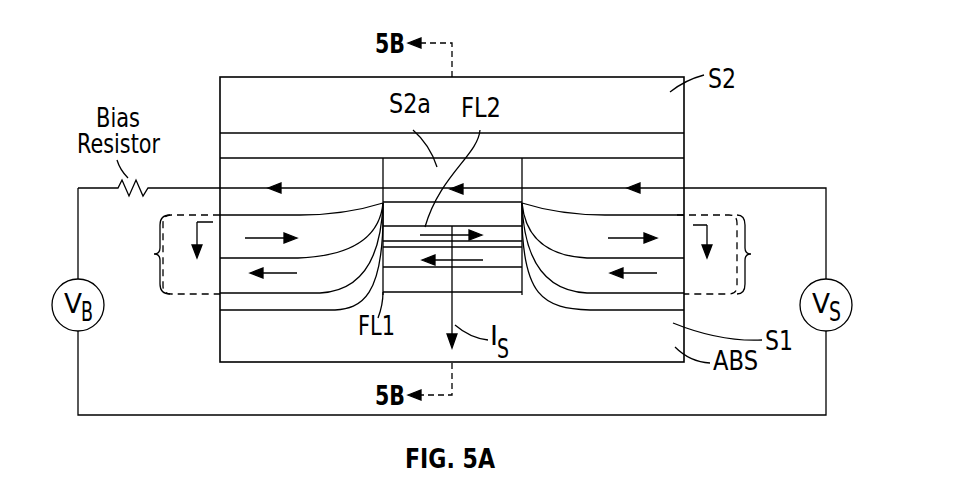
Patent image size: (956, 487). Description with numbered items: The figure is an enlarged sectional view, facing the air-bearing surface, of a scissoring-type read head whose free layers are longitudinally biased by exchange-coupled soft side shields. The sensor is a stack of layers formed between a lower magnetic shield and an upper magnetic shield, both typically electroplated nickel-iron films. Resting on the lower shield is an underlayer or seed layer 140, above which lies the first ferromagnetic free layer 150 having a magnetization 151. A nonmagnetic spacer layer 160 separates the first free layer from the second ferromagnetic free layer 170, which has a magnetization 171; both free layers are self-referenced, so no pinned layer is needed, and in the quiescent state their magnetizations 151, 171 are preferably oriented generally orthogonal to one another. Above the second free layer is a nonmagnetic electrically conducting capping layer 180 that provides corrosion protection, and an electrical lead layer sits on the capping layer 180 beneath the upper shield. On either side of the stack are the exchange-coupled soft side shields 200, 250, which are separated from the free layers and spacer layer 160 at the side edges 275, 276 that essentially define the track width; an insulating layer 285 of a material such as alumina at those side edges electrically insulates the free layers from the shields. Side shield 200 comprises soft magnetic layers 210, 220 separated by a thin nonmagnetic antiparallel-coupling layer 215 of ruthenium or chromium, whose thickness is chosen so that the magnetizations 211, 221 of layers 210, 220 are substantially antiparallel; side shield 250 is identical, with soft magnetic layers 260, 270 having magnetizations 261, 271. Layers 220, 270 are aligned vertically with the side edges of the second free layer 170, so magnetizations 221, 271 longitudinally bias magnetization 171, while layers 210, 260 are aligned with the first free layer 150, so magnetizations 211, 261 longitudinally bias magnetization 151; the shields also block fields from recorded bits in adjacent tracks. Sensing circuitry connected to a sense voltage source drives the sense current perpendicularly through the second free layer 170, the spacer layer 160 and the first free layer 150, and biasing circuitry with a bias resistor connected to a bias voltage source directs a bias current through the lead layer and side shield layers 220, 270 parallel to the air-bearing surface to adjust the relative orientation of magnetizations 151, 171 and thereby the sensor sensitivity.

The seed layer 140 is at (523, 293).
The first ferromagnetic free layer 150 is at (510, 270).
The magnetization of FL1 151 is at (445, 267).
The nonmagnetic spacer layer 160 is at (383, 200).
The second ferromagnetic free layer 170 is at (465, 227).
The magnetization of FL2 171 is at (450, 227).
The capping layer 180 is at (508, 207).
The exchange-coupled soft side shield 200 is at (168, 254).
The soft magnetic layer 210 is at (245, 288).
The magnetization of layer 210 211 is at (273, 276).
The antiparallel-coupling layer 215 is at (298, 258).
The soft magnetic layer 220 is at (265, 222).
The magnetization of layer 220 221 is at (253, 243).
The exchange-coupled soft side shield 250 is at (731, 254).
The soft magnetic layer 260 is at (678, 303).
The magnetization of layer 260 261 is at (630, 277).
The soft magnetic layer 270 is at (690, 202).
The magnetization of layer 270 271 is at (622, 243).
The side edge 275 is at (530, 262).
The side edge 276 is at (365, 262).
The insulating layer 285 is at (333, 302).